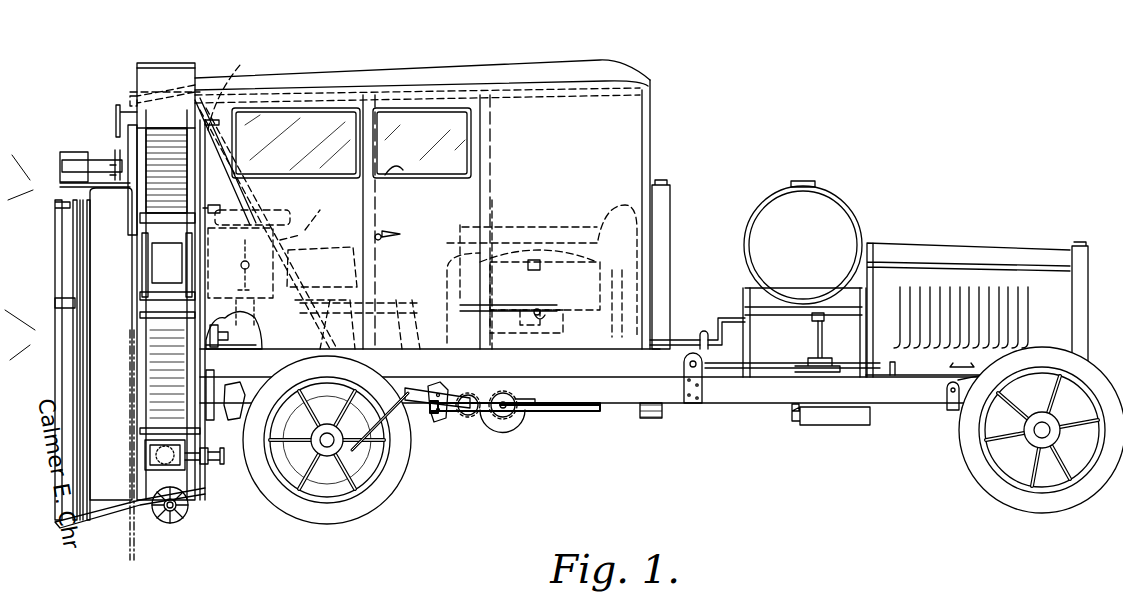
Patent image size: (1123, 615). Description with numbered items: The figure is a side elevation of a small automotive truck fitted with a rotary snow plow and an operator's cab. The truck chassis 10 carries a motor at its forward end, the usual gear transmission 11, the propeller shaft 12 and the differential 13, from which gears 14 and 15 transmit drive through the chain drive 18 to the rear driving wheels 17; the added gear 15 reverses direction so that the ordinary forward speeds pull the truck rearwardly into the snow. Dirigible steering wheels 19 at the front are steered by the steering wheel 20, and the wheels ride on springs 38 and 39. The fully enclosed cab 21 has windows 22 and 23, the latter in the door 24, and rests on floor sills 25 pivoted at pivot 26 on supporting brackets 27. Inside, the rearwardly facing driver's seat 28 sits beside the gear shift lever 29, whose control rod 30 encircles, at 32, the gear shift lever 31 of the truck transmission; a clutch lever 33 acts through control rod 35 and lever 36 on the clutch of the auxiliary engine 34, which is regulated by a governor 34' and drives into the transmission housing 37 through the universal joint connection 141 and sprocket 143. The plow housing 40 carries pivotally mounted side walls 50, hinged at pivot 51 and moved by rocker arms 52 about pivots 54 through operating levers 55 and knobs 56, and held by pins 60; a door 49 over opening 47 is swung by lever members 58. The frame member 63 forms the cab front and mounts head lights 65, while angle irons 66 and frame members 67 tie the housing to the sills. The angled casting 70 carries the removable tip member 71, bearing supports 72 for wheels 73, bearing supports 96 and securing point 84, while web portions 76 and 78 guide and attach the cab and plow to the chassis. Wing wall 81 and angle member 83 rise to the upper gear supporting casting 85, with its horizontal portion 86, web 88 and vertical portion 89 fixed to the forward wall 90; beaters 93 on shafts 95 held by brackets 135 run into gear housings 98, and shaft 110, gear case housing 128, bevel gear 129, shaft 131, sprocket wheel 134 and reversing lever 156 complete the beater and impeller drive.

The truck chassis 10 is at (640, 420).
The gear transmission 11 is at (818, 422).
The propeller shaft 12 is at (572, 412).
The differential 13 is at (492, 418).
The gear 14 is at (505, 418).
The gear 15 is at (470, 416).
The rear driving wheels 17 is at (295, 512).
The chain drive 18 is at (418, 422).
The dirigible steering wheels 19 is at (975, 465).
The steering wheel 20 is at (270, 212).
The cab 21 is at (300, 68).
The window 22 is at (332, 110).
The window 23 is at (405, 110).
The door 24 is at (470, 192).
The floor sills 25 is at (677, 374).
The pivot 26 is at (694, 349).
The supporting brackets 27 is at (695, 396).
The driver's seat 28 is at (330, 262).
The gear shift lever 29 is at (288, 217).
The control rod 30 is at (722, 314).
The gear shift lever 31 is at (830, 358).
The encircling connection 32 is at (816, 318).
The clutch lever 33 is at (275, 252).
The auxiliary engine 34 is at (542, 271).
The governor 34' is at (528, 362).
The control rod 35 is at (400, 302).
The lever 36 is at (422, 327).
The transmission housing 37 is at (215, 320).
The springs 38 is at (418, 388).
The springs 39 is at (952, 420).
The housing 40 is at (158, 352).
The opening 47 is at (92, 110).
The door 49 is at (188, 40).
The side walls 50 is at (135, 198).
The pivot 51 is at (165, 440).
The rocker arms 52 is at (150, 285).
The pivots 54 is at (158, 348).
The operating levers 55 is at (240, 258).
The operating knobs 56 is at (225, 161).
The lever members 58 is at (247, 70).
The pins or rods 60 is at (135, 245).
The frame member 63 is at (135, 94).
The head lights 65 is at (130, 110).
The supporting angle irons 66 is at (264, 133).
The frame members 67 is at (210, 374).
The angled casting 70 is at (135, 555).
The tip member 71 is at (70, 526).
The bearing supports 72 is at (171, 524).
The wheels 73 is at (185, 518).
The web portions 76 is at (215, 390).
The web portions 78 is at (240, 294).
The vertically extending member 81 is at (96, 304).
The angle member 83 is at (88, 226).
The securing point 84 is at (150, 466).
The upper gear supporting casting 85 is at (125, 178).
The horizontally extending portion 86 is at (58, 186).
The web portion 88 is at (118, 208).
The vertically extending portion 89 is at (133, 222).
The forward wall 90 is at (138, 196).
The beaters 93 is at (60, 266).
The shaft members 95 is at (72, 342).
The bearing supports 96 is at (110, 528).
The gear housings 98 is at (62, 166).
The shaft 110 is at (142, 165).
The gear case housing 128 is at (147, 448).
The bevel gear 129 is at (133, 535).
The shaft 131 is at (206, 488).
The sprocket wheel 134 is at (212, 470).
The bracket members 135 is at (60, 296).
The universal joint connection 141 is at (228, 325).
The sprocket 143 is at (235, 338).
The reversing lever 156 is at (241, 263).